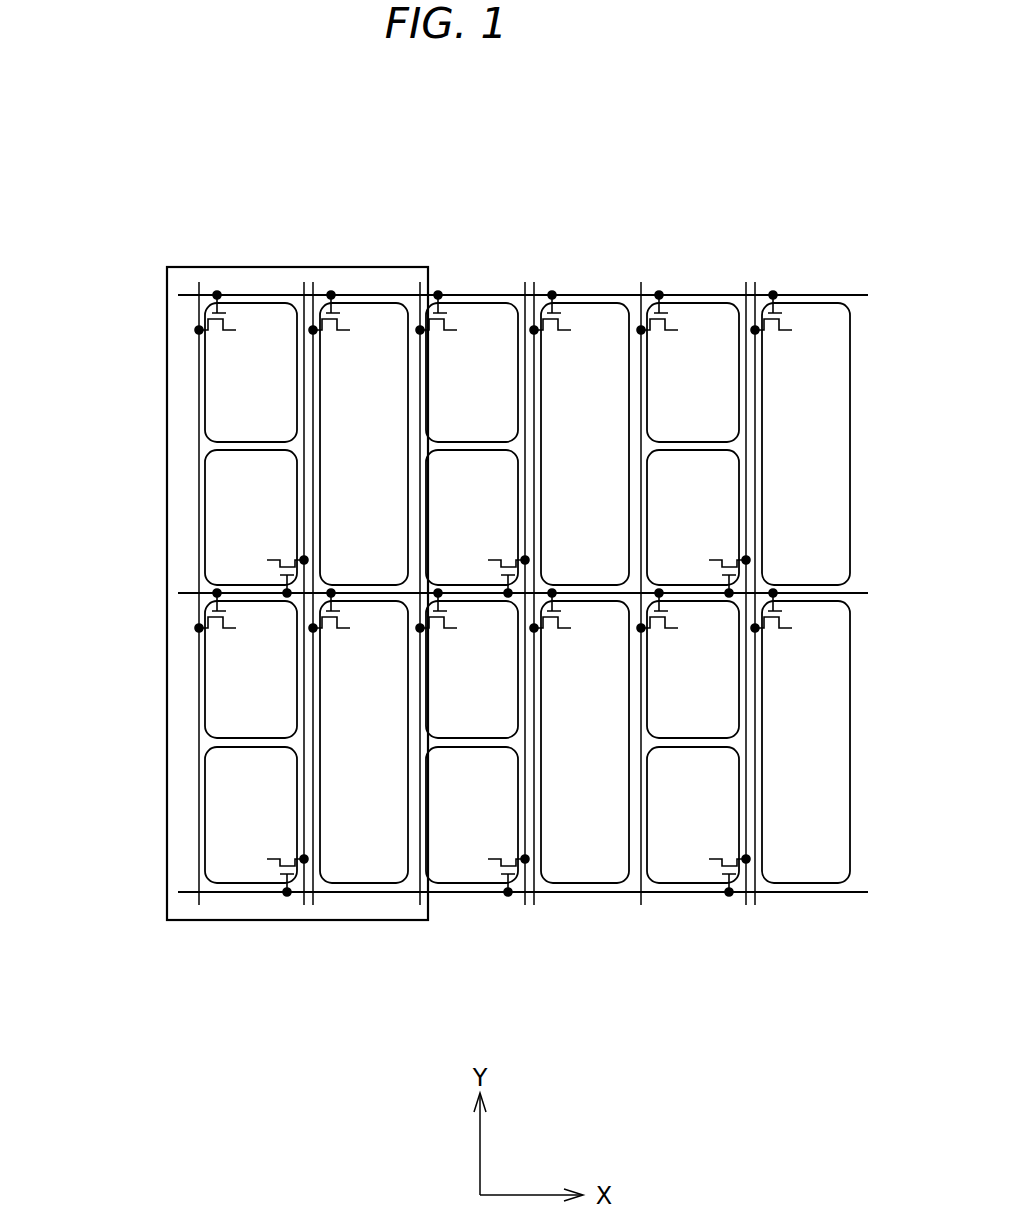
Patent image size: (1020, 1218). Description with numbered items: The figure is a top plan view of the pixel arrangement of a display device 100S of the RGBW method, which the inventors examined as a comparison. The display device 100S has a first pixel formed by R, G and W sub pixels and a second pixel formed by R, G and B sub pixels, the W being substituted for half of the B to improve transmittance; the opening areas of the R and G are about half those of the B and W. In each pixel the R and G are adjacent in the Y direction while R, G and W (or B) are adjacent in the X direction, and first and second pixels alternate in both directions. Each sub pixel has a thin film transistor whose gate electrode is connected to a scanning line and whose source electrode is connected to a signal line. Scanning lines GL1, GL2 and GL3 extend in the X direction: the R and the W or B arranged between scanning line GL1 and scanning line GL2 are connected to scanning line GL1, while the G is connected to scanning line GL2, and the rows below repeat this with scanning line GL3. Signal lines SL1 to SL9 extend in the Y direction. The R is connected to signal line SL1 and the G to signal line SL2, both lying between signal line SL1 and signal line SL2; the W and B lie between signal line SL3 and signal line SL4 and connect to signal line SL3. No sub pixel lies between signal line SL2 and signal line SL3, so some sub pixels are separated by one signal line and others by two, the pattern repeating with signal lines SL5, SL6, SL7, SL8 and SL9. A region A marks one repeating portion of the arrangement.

The display device 100S is at (545, 123).
The region of pixel array A is at (357, 926).
The scanning line GL1 is at (178, 296).
The scanning line GL2 is at (178, 594).
The scanning line GL3 is at (178, 893).
The signal line SL1 is at (199, 282).
The signal line SL2 is at (304, 282).
The signal line SL3 is at (313, 282).
The signal line SL4 is at (420, 282).
The signal line SL5 is at (525, 282).
The signal line SL6 is at (534, 282).
The signal line SL7 is at (641, 282).
The signal line SL8 is at (746, 282).
The signal line SL9 is at (755, 282).